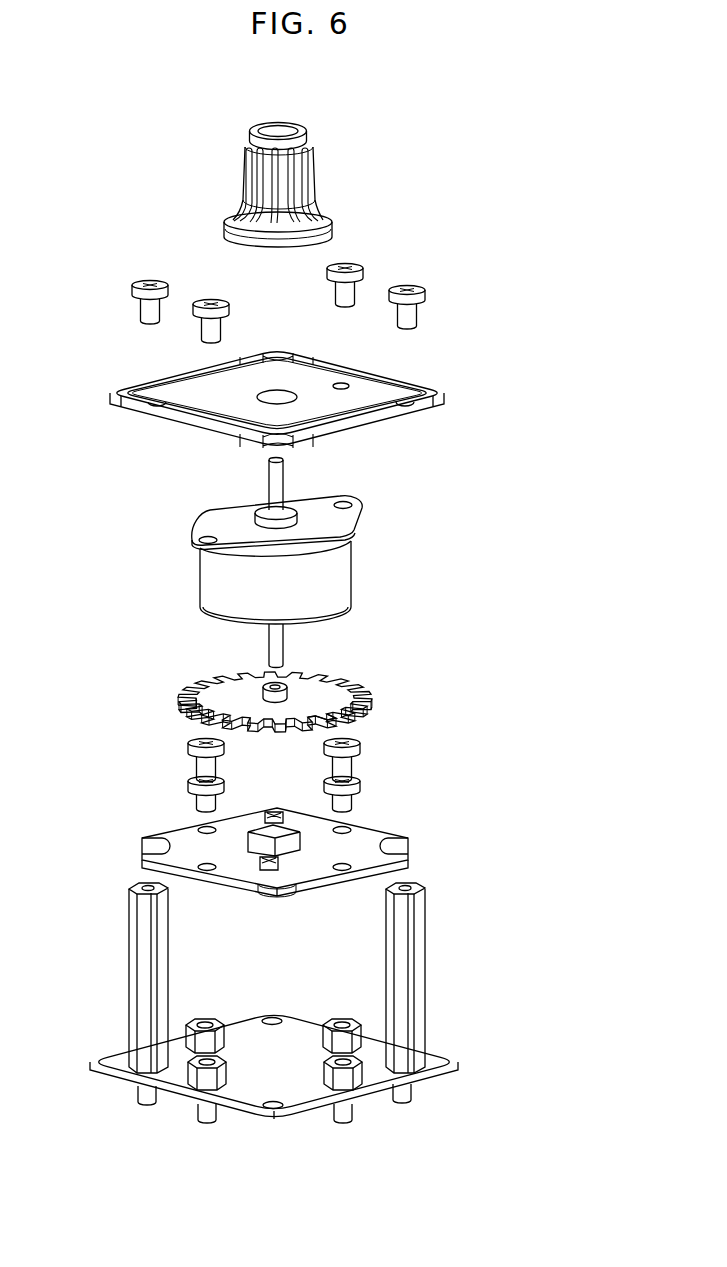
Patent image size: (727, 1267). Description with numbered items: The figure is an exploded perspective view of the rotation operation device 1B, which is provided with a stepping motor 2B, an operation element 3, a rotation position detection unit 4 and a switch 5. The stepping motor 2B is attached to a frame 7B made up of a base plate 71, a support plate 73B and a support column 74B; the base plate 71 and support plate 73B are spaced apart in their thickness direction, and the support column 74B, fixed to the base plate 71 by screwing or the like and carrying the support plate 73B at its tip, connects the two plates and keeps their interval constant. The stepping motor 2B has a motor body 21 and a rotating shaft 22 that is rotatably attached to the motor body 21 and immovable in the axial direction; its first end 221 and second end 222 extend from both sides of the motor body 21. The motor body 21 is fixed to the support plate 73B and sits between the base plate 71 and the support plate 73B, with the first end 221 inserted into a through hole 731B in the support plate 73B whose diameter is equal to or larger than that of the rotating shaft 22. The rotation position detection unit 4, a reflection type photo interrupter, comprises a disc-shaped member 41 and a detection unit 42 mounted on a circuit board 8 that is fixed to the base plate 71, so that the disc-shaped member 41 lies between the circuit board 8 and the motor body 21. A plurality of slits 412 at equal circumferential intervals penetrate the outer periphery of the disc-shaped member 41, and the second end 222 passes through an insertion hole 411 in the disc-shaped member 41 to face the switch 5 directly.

The rotation operation device 1B is at (480, 196).
The operation element 3 is at (314, 152).
The frame 7B is at (122, 378).
The through hole 731B is at (278, 388).
The support plate 73B is at (447, 401).
The stepping motor 2B is at (259, 560).
The rotating shaft 22 is at (232, 490).
The first end 221 is at (284, 472).
The second end 222 is at (284, 640).
The motor body 21 is at (345, 568).
The rotation position detection unit 4 is at (259, 704).
The disc-shaped member 41 is at (182, 698).
The insertion hole 411 is at (285, 680).
The slits 412 is at (352, 726).
The circuit board 8 is at (400, 840).
The switch 5 is at (255, 840).
The detection unit 42 is at (283, 818).
The base plate 71 is at (299, 1003).
The support column 74B is at (128, 986).